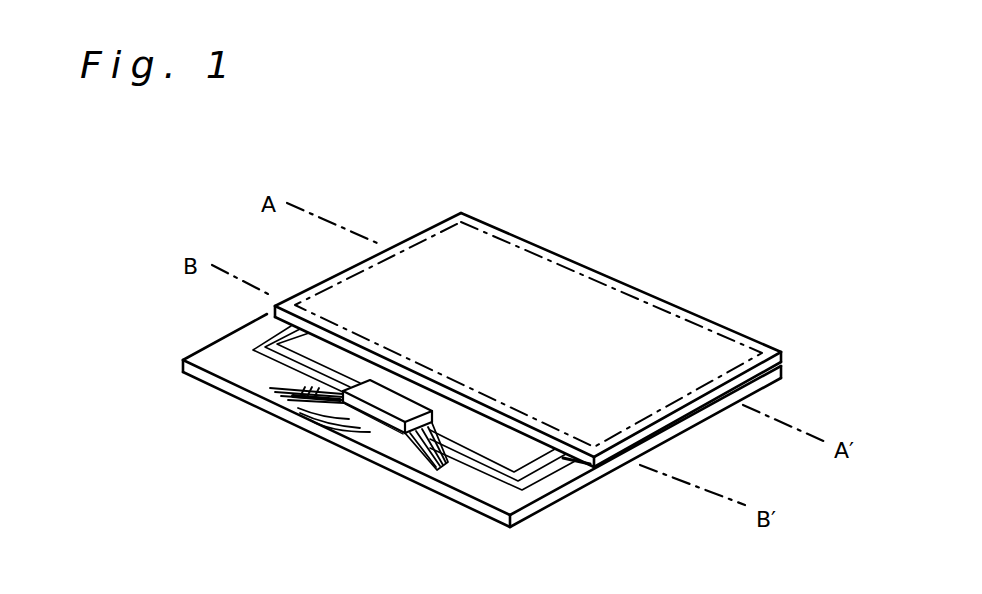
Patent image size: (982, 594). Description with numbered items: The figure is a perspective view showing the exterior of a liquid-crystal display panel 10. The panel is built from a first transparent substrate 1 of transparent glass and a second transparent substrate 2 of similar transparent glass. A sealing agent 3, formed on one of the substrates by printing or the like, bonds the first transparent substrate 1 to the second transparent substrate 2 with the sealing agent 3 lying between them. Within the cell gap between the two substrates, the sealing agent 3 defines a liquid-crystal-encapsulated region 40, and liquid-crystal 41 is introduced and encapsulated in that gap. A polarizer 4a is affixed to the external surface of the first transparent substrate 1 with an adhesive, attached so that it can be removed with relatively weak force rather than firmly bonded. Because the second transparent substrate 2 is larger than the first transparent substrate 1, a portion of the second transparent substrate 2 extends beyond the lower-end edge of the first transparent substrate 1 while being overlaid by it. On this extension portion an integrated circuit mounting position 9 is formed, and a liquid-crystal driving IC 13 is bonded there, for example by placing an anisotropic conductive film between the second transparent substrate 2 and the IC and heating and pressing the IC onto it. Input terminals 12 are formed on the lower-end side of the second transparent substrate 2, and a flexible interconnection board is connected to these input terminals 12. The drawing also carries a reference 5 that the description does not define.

The first transparent substrate 1 is at (784, 353).
The second transparent substrate 2 is at (768, 379).
The sealing agent 3 is at (688, 393).
The polarizer 4a is at (662, 299).
The liquid crystal layer region 5 is at (328, 278).
The integrated circuit (IC) mounting position 9 is at (367, 440).
The liquid-crystal display panel 10 is at (609, 246).
The input terminals 12 is at (318, 422).
The liquid-crystal driving IC 13 is at (392, 403).
The liquid-crystal-encapsulated region 40 is at (627, 408).
The liquid-crystal 41 is at (603, 436).